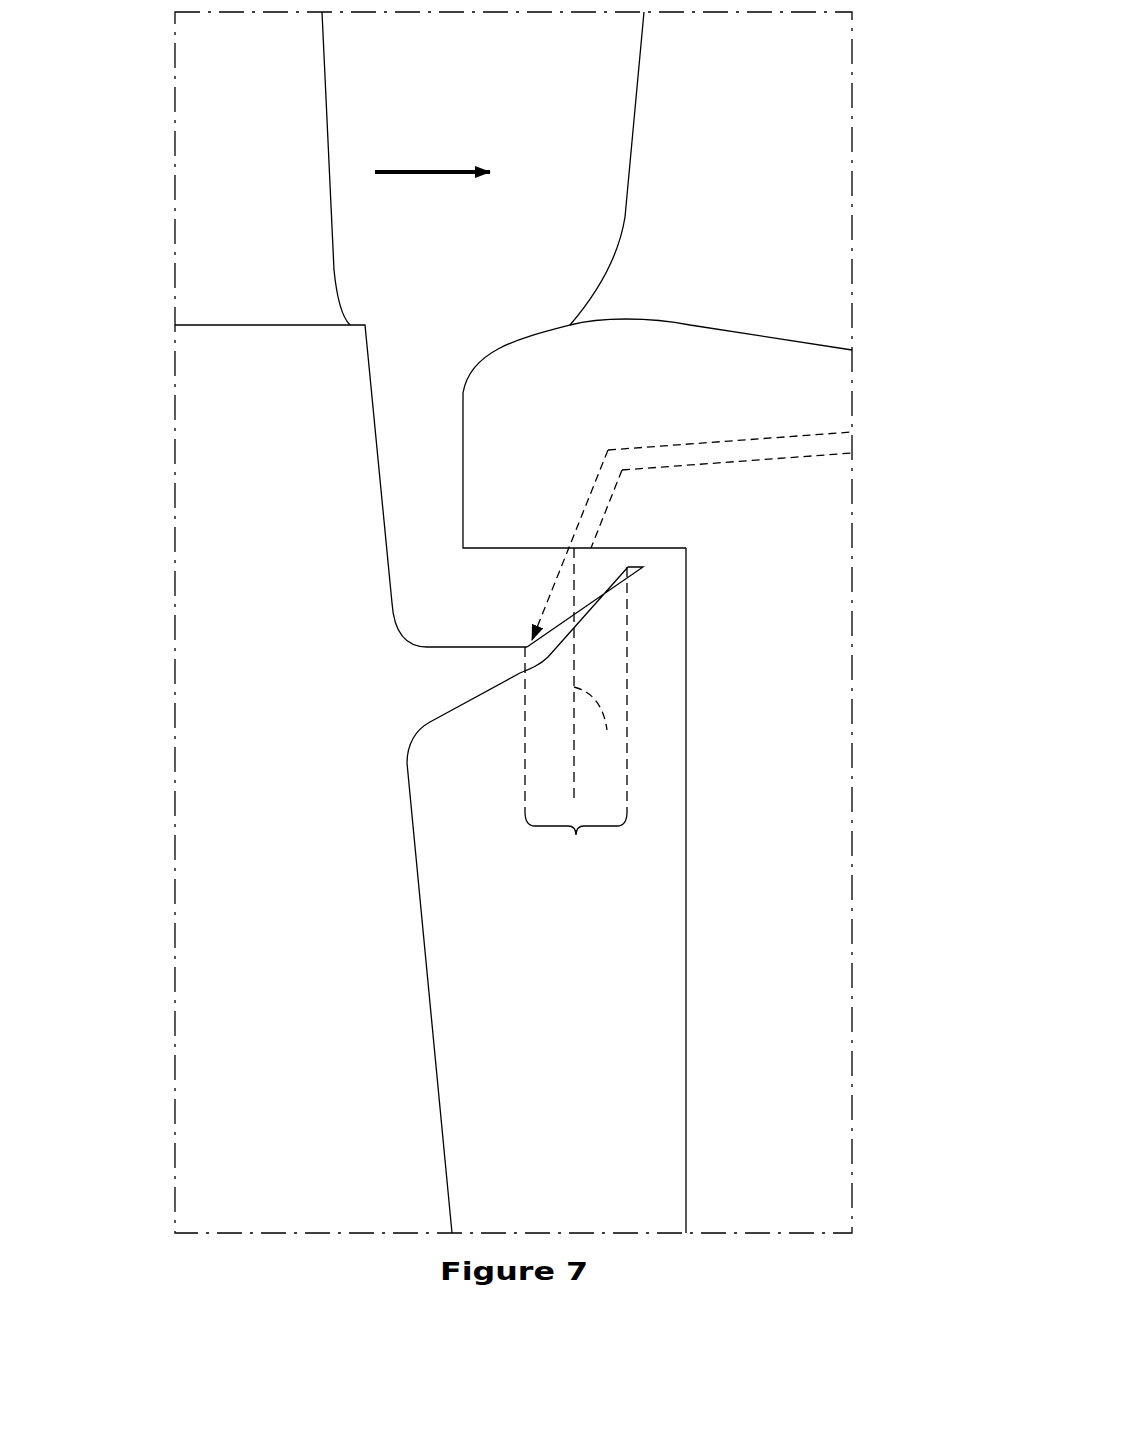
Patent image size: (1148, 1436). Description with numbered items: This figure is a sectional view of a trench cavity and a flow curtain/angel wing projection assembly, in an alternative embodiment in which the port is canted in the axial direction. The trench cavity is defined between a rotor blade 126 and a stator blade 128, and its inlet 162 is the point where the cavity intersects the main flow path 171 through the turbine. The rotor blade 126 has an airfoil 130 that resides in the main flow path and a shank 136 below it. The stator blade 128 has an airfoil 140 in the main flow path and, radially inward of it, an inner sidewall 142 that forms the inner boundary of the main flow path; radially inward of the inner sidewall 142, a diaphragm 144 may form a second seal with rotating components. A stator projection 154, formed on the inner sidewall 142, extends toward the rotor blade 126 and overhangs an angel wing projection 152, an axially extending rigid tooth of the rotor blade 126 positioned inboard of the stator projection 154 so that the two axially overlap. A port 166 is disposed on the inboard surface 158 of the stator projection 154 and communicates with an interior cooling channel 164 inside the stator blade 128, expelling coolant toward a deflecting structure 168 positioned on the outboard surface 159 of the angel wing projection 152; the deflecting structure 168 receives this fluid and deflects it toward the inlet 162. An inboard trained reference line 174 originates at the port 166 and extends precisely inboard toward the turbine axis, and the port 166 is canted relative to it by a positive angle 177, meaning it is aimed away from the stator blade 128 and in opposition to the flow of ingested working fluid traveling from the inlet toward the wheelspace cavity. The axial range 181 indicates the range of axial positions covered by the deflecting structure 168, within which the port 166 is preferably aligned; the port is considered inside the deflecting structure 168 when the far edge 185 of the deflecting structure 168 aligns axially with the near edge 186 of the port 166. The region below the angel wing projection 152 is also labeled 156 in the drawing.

The rotor blade 126 is at (204, 273).
The stator blade 128 is at (826, 258).
The airfoil 130 is at (330, 252).
The shank 136 is at (320, 483).
The airfoil 140 is at (773, 278).
The inner sidewall 142 is at (723, 398).
The diaphragm 144 is at (807, 828).
The angel wing projection 152 is at (465, 690).
The stator projection 154 is at (533, 468).
The blade platform body 156 is at (562, 1030).
The inboard surface 158 is at (668, 549).
The outboard surface 159 is at (478, 645).
The inlet 162 is at (442, 358).
The interior cooling channel 164 is at (593, 486).
The port 166 is at (564, 552).
The deflecting structure 168 is at (602, 590).
The main flow path 171 is at (428, 168).
The inboard trained reference line 174 is at (600, 722).
The angle 177 is at (587, 592).
The axial range 181 is at (576, 707).
The far edge 185 is at (630, 568).
The near edge 186 is at (593, 548).